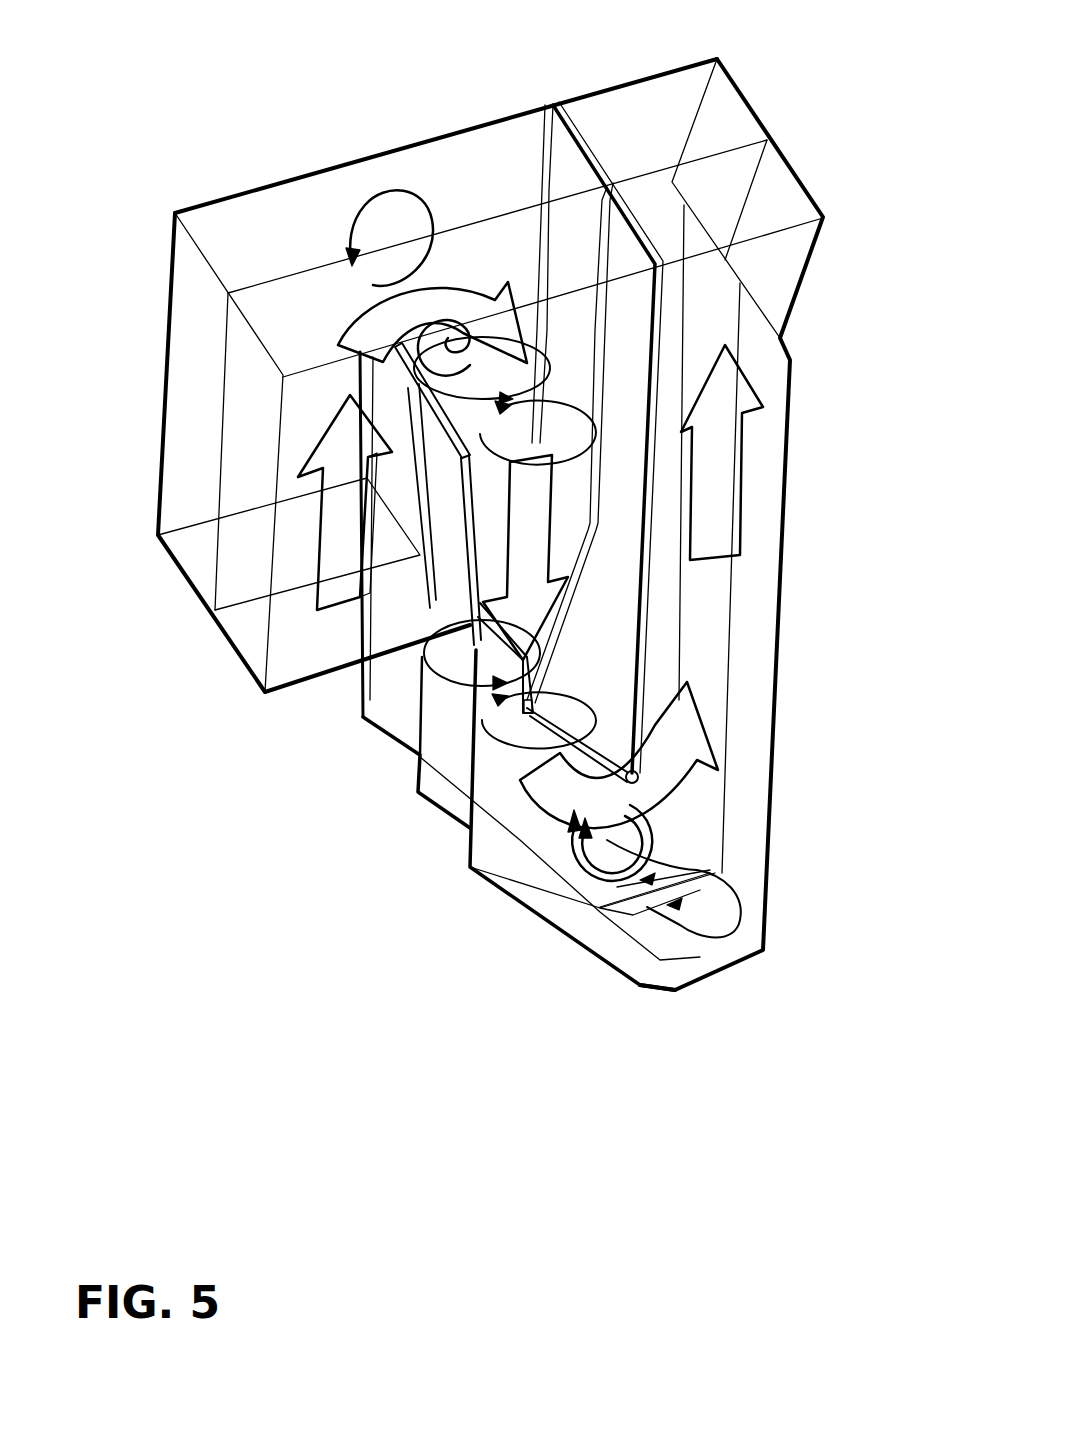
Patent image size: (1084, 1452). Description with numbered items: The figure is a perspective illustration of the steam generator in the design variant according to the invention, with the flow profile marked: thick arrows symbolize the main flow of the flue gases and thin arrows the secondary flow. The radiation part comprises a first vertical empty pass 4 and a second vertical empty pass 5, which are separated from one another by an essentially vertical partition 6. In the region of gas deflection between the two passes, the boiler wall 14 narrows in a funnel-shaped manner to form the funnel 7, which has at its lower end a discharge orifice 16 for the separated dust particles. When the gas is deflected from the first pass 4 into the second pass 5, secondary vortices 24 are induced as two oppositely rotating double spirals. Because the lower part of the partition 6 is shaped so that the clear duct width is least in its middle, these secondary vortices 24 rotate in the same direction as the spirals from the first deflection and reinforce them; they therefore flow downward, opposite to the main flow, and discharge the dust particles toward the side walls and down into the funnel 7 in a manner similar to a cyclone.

The first vertical empty pass 4 is at (494, 567).
The second vertical empty pass 5 is at (697, 605).
The partition 6 is at (565, 158).
The funnel 7 is at (670, 943).
The boiler wall 14 is at (451, 545).
The discharge orifice 16 is at (687, 975).
The secondary vortices 24 is at (577, 873).